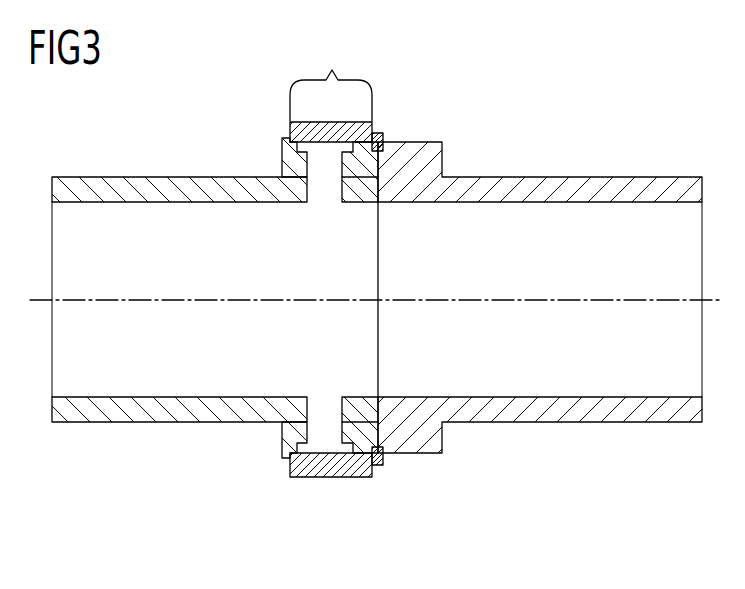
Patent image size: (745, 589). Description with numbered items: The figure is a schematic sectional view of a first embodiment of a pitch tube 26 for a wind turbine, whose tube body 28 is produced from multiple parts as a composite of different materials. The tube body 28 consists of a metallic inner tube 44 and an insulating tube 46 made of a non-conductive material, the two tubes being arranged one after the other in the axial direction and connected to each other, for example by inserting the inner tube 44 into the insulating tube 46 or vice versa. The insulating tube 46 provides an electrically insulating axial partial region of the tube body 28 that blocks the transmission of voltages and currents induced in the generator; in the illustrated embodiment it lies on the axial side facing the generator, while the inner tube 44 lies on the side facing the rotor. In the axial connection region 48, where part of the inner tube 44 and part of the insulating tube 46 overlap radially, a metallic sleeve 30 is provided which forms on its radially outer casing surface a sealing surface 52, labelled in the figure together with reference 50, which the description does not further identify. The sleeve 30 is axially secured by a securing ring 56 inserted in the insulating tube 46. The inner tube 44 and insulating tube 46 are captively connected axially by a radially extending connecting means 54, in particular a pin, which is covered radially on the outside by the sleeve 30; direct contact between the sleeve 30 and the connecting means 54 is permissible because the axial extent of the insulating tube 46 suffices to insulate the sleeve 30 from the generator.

The pitch tube 26 is at (556, 138).
The tube body 28 is at (217, 423).
The sleeve 30 is at (350, 478).
The inner tube 44 is at (97, 182).
The insulating tube 46 is at (657, 176).
The axial connection region 48 is at (332, 70).
The screw 50 is at (307, 477).
The sealing surface 52 is at (318, 487).
The connecting means 54 is at (320, 167).
The securing ring 56 is at (384, 140).